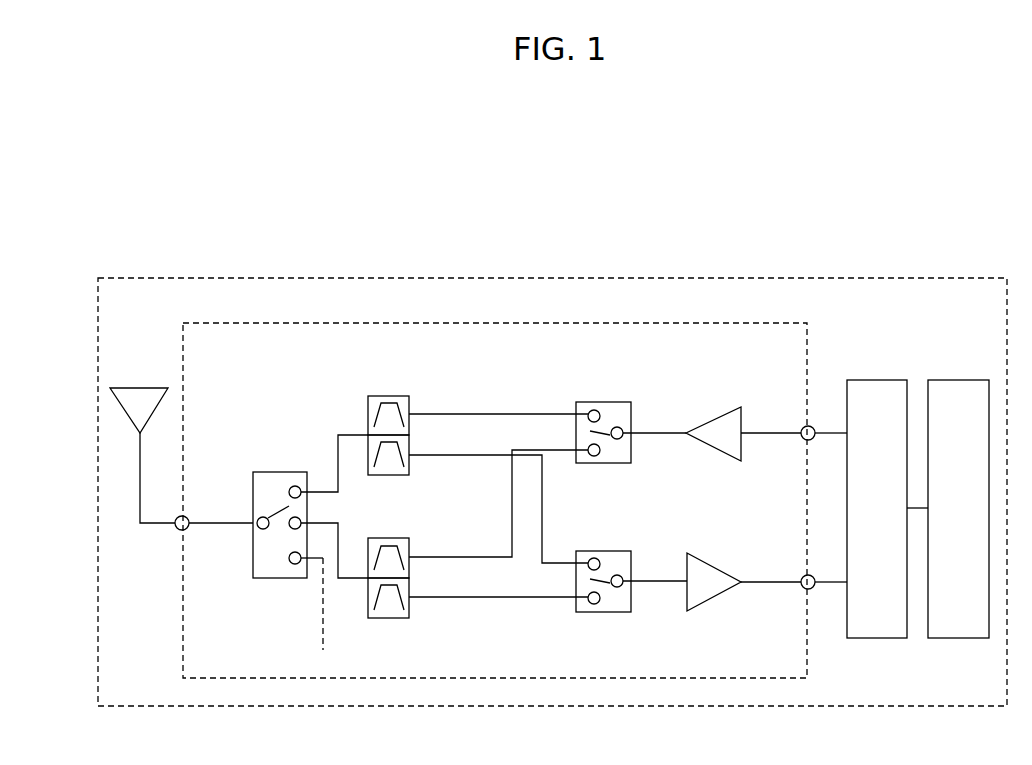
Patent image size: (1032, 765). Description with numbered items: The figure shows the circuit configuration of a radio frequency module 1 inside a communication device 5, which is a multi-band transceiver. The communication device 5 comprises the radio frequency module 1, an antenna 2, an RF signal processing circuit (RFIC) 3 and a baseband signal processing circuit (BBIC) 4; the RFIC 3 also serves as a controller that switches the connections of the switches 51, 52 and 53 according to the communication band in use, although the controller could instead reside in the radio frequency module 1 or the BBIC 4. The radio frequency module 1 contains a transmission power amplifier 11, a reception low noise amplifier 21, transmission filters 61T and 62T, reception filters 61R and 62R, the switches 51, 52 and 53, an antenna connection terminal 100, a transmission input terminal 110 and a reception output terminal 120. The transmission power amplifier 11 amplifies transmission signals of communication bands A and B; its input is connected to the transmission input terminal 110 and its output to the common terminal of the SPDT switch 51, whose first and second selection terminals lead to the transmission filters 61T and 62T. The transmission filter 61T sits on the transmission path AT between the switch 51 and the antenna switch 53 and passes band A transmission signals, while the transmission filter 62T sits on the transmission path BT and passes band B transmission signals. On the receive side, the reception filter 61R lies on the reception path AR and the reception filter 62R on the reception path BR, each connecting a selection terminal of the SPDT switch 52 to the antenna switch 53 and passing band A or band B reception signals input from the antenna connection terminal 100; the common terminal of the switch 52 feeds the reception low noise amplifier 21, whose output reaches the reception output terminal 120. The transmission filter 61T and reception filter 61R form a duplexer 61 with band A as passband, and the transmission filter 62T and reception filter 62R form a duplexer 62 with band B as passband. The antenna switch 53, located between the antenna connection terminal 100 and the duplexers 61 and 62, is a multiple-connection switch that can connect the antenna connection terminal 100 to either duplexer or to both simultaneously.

The radio frequency module 1 is at (771, 324).
The antenna 2 is at (150, 388).
The RF signal processing circuit (RFIC) 3 is at (864, 380).
The baseband signal processing circuit (BBIC) 4 is at (946, 380).
The communication device 5 is at (966, 279).
The transmission power amplifier 11 is at (714, 449).
The reception low noise amplifier 21 is at (708, 565).
The switch 51 is at (600, 402).
The switch 52 is at (600, 551).
The antenna switch 53 is at (272, 472).
The duplexer 61 is at (433, 436).
The transmission filter 61T is at (411, 405).
The reception filter 61R is at (411, 446).
The duplexer 62 is at (433, 578).
The transmission filter 62T is at (411, 549).
The reception filter 62R is at (411, 588).
The antenna connection terminal 100 is at (176, 530).
The transmission input terminal 110 is at (801, 442).
The reception output terminal 120 is at (801, 591).
The transmission path AT is at (506, 416).
The reception path AR is at (474, 457).
The transmission path BT is at (506, 559).
The reception path BR is at (506, 599).